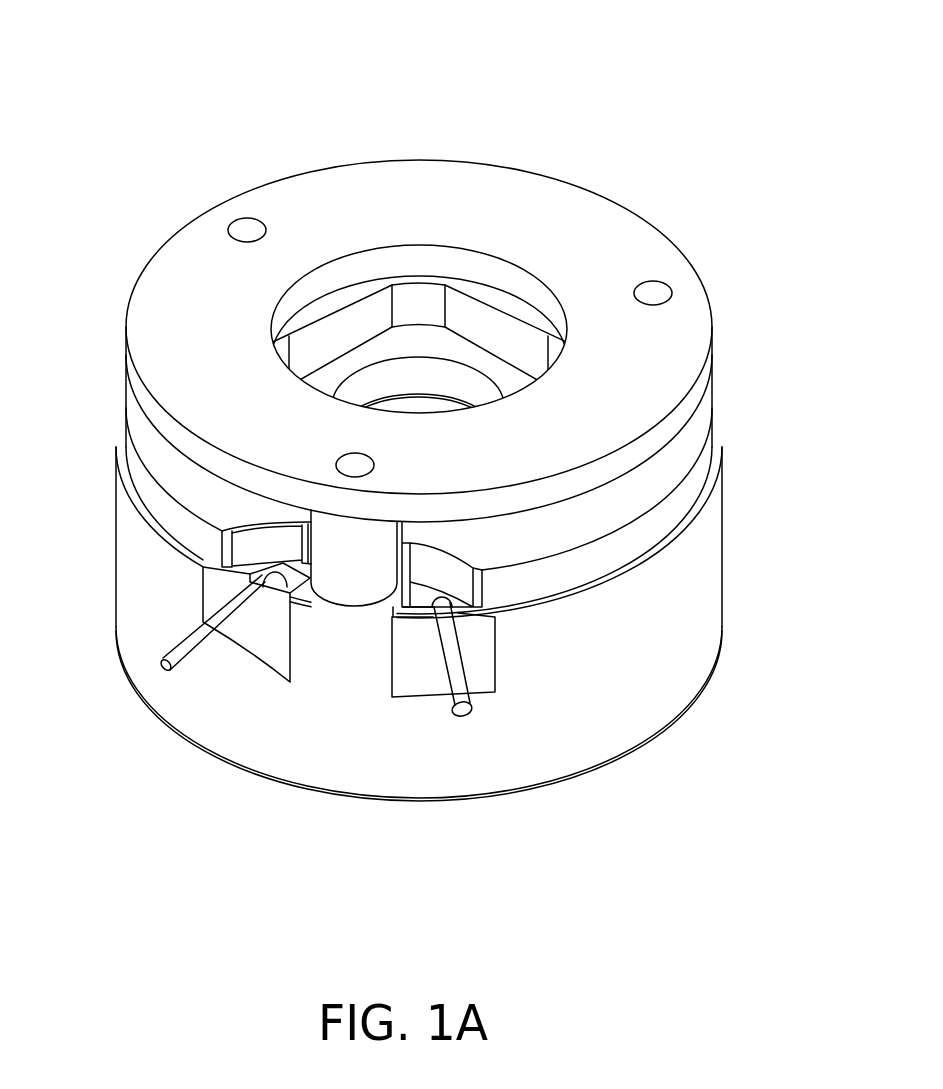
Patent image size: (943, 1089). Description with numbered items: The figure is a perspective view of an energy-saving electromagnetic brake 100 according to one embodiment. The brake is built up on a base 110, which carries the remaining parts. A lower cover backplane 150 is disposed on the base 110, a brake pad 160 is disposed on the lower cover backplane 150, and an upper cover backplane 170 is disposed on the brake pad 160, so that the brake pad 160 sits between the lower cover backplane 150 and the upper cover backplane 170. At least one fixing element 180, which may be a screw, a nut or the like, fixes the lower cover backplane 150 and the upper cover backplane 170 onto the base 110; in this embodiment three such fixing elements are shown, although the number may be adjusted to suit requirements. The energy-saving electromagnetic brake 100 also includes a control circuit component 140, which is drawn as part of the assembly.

The energy-saving electromagnetic brake 100 is at (82, 63).
The base 110 is at (667, 677).
The control circuit component 140 is at (258, 655).
The lower cover backplane 150 is at (650, 486).
The brake pad 160 is at (333, 303).
The upper cover backplane 170 is at (623, 225).
The fixing element 180 is at (347, 587).